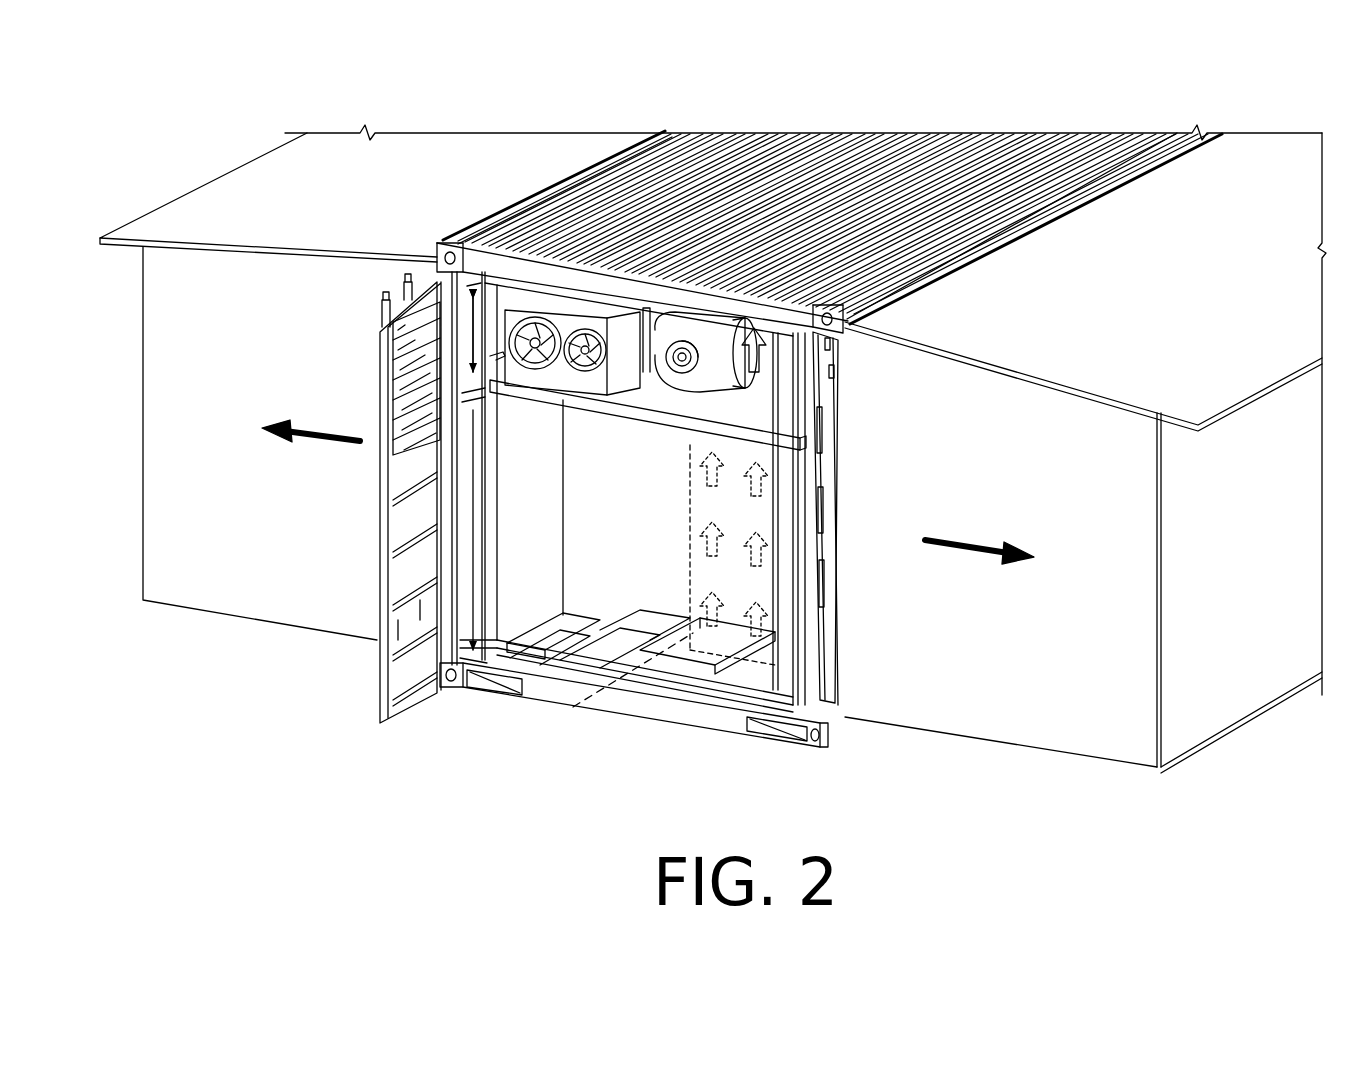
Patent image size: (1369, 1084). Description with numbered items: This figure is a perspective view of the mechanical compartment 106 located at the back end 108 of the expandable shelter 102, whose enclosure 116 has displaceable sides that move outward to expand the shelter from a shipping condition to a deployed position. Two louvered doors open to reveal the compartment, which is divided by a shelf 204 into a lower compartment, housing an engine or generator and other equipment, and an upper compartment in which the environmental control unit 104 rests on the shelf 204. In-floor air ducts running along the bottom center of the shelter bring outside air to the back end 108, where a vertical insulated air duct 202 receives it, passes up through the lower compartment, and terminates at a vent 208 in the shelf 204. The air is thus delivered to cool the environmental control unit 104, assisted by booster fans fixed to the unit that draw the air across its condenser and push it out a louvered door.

The expandable shelter 102 is at (160, 92).
The environmental control unit (ECU) 104 is at (632, 336).
The mechanical compartment 106 is at (455, 276).
The back end 108 is at (616, 653).
The enclosure 116 is at (542, 190).
The insulated air duct 202 is at (688, 503).
The shelf 204 is at (640, 425).
The vent 208 is at (775, 392).